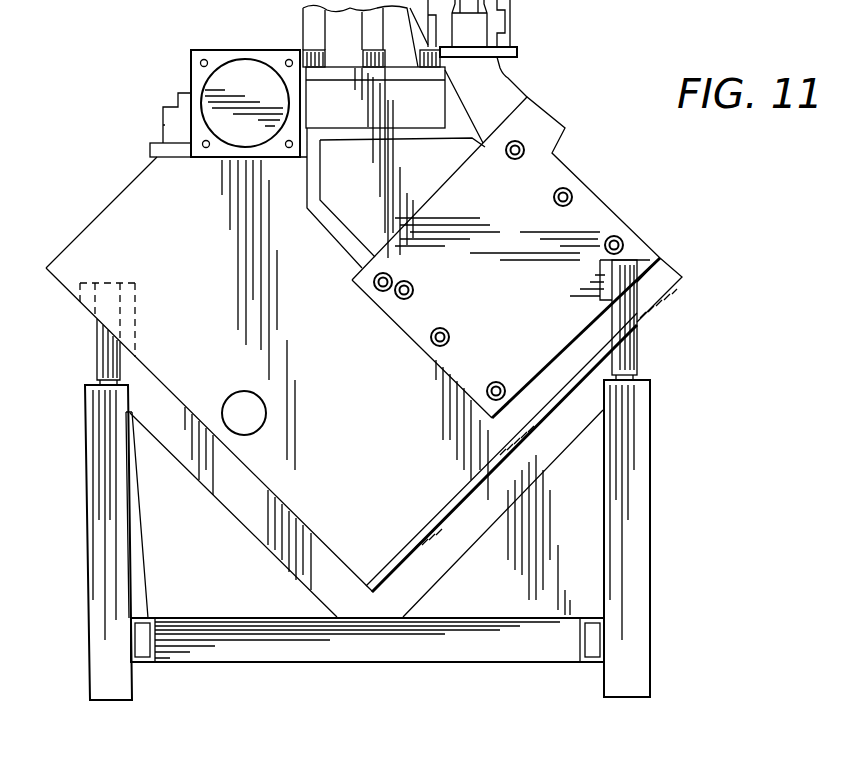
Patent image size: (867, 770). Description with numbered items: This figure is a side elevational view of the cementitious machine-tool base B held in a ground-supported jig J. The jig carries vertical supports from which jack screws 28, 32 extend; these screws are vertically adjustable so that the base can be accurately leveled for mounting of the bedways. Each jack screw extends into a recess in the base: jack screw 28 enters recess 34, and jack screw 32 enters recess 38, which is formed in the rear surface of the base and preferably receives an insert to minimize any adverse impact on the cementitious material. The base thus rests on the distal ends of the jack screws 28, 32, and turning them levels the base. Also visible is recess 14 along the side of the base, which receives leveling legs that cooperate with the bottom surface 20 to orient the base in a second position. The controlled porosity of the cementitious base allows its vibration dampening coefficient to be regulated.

The recess 14 is at (437, 506).
The bottom surface 20 is at (167, 399).
The jack screw 28 is at (625, 350).
The jack screw 32 is at (98, 350).
The recess 34 is at (604, 283).
The recess 38 is at (126, 314).